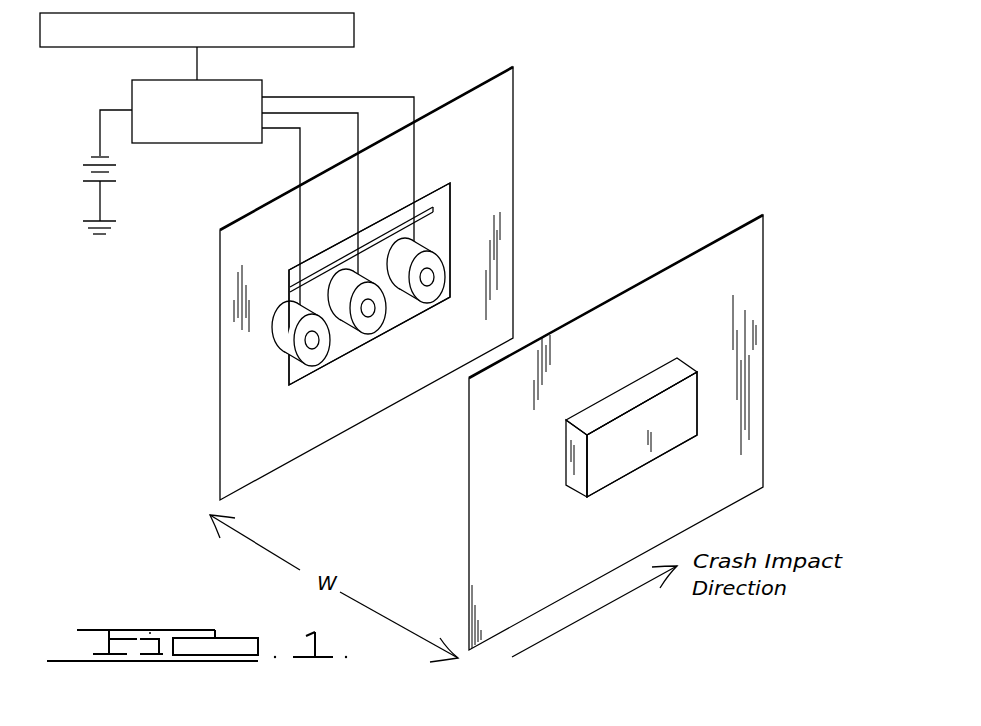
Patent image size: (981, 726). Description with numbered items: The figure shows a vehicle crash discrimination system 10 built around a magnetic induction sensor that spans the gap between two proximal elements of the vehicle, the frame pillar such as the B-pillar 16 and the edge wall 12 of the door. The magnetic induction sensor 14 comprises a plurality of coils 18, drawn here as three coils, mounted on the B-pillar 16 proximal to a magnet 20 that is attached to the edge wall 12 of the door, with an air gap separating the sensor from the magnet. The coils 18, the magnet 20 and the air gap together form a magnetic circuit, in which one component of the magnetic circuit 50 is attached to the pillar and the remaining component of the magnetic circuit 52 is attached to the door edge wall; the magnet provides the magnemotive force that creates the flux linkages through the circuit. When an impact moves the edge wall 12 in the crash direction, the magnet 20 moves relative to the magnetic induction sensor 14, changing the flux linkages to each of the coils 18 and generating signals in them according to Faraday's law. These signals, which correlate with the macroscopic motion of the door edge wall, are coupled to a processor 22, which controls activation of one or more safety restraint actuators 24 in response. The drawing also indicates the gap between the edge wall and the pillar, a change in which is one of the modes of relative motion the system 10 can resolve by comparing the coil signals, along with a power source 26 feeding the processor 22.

The crash discrimination system 10 is at (692, 136).
The edge wall 12 is at (763, 268).
The magnetic induction sensor 14 is at (458, 251).
The component of the magnetic circuit 50 is at (369, 284).
The B-pillar 16 is at (513, 105).
The coils 18 is at (312, 368).
The magnet 20 is at (698, 397).
The remaining component of the magnetic circuit 52 is at (642, 434).
The processor 22 is at (177, 143).
The safety restraint actuator 24 is at (64, 48).
The battery / power source 26 is at (83, 172).